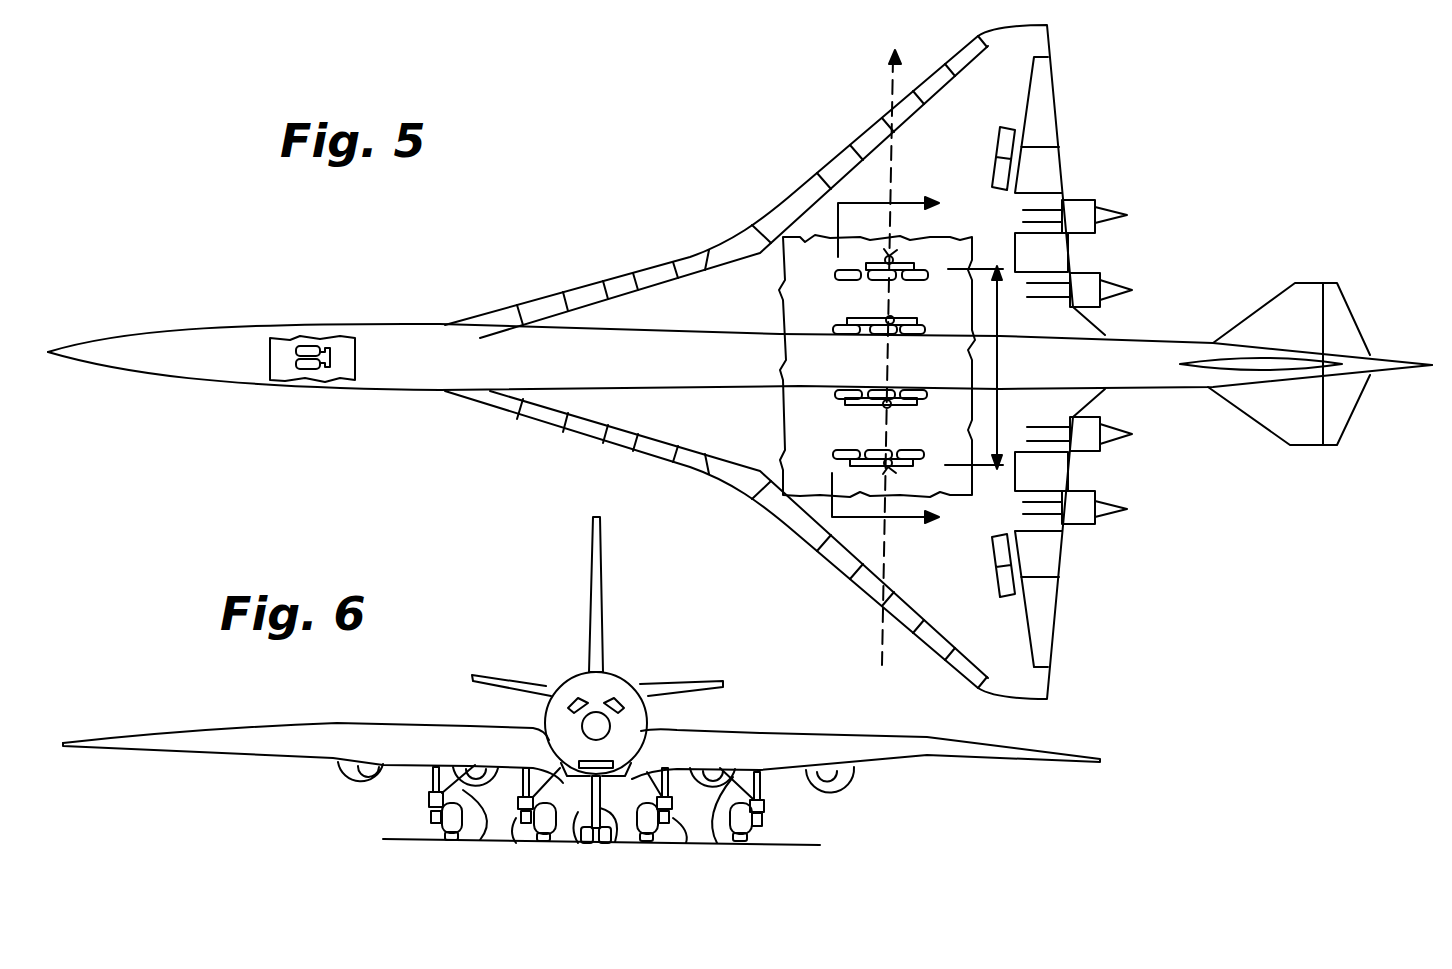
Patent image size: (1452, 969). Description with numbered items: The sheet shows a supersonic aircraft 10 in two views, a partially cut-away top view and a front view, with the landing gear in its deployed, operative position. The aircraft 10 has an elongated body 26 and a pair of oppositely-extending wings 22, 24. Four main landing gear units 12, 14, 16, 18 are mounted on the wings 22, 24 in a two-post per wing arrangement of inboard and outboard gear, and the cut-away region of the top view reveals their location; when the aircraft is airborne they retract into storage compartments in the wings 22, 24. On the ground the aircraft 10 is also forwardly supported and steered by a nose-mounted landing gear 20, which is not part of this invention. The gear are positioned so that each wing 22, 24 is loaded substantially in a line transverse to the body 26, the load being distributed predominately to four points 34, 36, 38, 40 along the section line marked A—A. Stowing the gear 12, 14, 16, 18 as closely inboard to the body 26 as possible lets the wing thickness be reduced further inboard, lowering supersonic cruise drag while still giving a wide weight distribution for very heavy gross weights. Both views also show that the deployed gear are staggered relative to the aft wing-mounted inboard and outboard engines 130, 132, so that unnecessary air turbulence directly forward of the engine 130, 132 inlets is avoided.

In FIG. 5, the aircraft 10 is at (692, 232).
In FIG. 6, the aircraft 10 is at (642, 661).
In FIG. 5, the main landing gear 12 is at (840, 312).
In FIG. 6, the main landing gear 12 is at (533, 818).
In FIG. 5, the main landing gear 14 is at (842, 408).
In FIG. 6, the main landing gear 14 is at (676, 820).
In FIG. 5, the main landing gear 16 is at (860, 260).
In FIG. 6, the main landing gear 16 is at (424, 810).
In FIG. 5, the main landing gear 18 is at (835, 462).
In FIG. 6, the main landing gear 18 is at (768, 820).
In FIG. 5, the nose-mounted landing gear 20 is at (324, 347).
In FIG. 6, the nose-mounted landing gear 20 is at (613, 847).
In FIG. 5, the wing 22 is at (1013, 92).
In FIG. 6, the wing 22 is at (196, 743).
In FIG. 5, the wing 24 is at (1015, 647).
In FIG. 6, the wing 24 is at (937, 750).
In FIG. 5, the body 26 is at (585, 335).
In FIG. 6, the body 26 is at (583, 683).
In FIG. 5, the load point 34 is at (903, 258).
In FIG. 5, the load point 36 is at (897, 320).
In FIG. 5, the load point 38 is at (900, 408).
In FIG. 5, the load point 40 is at (898, 468).
In FIG. 5, the inboard engine 130 is at (1082, 280).
In FIG. 6, the inboard engine 130 is at (476, 843).
In FIG. 5, the outboard engine 132 is at (1082, 200).
In FIG. 6, the outboard engine 132 is at (350, 781).